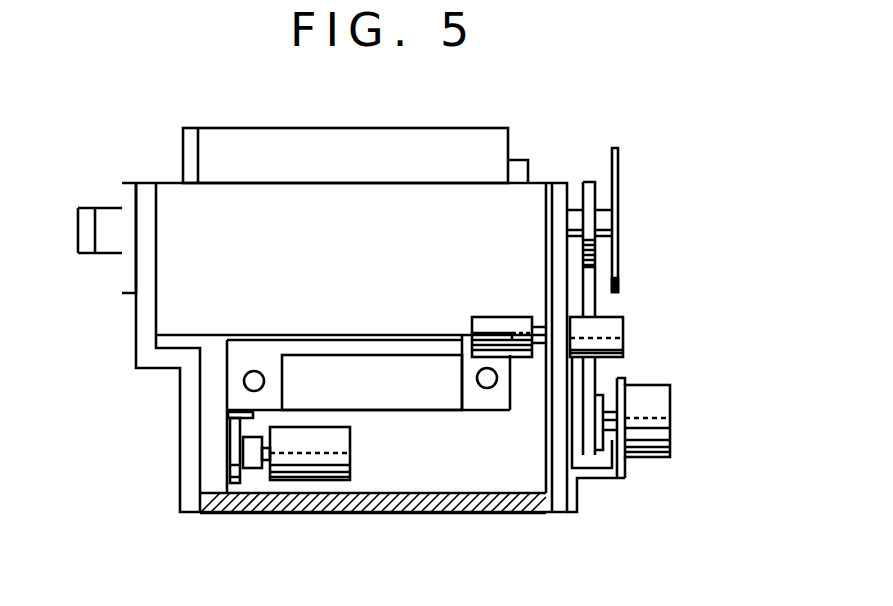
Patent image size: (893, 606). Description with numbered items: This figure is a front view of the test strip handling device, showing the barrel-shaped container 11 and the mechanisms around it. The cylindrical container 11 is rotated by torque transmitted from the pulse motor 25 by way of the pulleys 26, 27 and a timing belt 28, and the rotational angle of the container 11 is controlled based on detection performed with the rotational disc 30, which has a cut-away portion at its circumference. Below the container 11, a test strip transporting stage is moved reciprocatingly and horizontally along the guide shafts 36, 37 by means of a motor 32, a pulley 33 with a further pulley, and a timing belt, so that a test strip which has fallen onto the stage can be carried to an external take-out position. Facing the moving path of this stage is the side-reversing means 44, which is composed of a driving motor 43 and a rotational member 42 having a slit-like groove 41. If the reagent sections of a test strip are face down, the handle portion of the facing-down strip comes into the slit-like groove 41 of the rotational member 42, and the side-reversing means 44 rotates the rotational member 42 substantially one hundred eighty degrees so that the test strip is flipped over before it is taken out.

The barrel-shaped container 11 is at (380, 128).
The pulse motor 25 is at (672, 428).
The pulley 26 is at (606, 470).
The pulley 27 is at (590, 182).
The timing belt 28 is at (600, 303).
The rotational disc 30 is at (620, 188).
The motor 32 is at (322, 482).
The pulley 33 is at (236, 485).
The guide shaft 36 is at (244, 381).
The guide shaft 37 is at (487, 390).
The slit-like groove 41 is at (483, 333).
The rotational member 42 is at (512, 317).
The driving motor 43 is at (628, 345).
The side-reversing means 44 is at (626, 331).